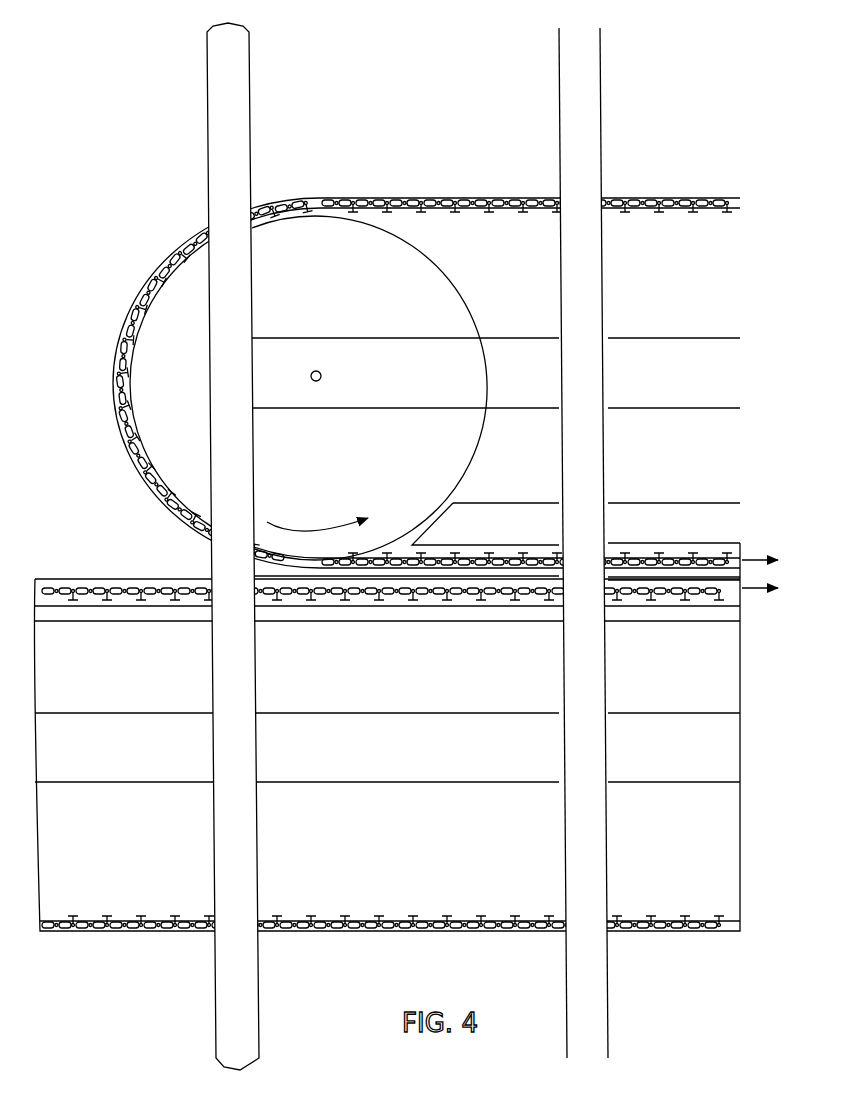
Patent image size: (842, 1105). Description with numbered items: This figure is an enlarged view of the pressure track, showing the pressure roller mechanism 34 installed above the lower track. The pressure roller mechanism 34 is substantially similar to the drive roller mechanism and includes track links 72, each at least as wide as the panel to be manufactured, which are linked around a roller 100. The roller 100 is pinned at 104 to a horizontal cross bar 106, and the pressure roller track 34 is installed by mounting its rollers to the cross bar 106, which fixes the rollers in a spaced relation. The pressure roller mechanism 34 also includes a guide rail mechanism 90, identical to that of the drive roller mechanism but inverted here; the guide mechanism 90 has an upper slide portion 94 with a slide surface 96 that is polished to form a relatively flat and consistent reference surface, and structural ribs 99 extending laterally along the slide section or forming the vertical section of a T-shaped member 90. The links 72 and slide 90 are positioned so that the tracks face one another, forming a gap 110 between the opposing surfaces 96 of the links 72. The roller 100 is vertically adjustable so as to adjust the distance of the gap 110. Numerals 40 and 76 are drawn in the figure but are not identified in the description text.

The pressure roller mechanism 34 is at (636, 172).
The second conveyor 40 is at (245, 887).
The track links 72 is at (711, 560).
The belt links 76 is at (97, 583).
The guide rail mechanism 90 is at (628, 520).
The upper slide portion 94 is at (600, 600).
The slide surface 96 is at (338, 600).
The structural ribs 99 is at (285, 753).
The roller 100 is at (427, 306).
The pin 104 is at (321, 376).
The cross bar 106 is at (703, 378).
The gap 110 is at (703, 573).